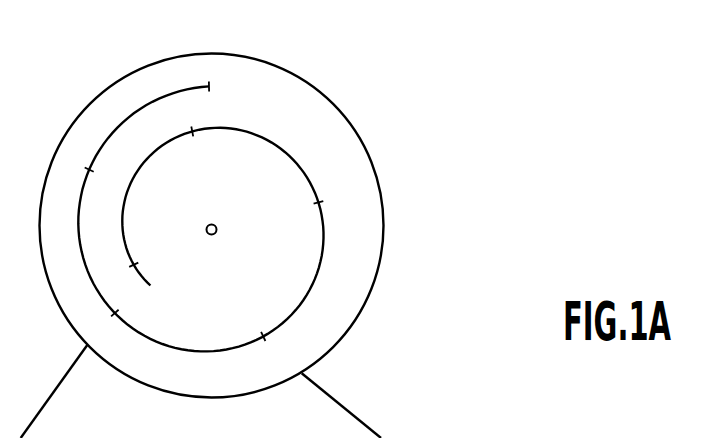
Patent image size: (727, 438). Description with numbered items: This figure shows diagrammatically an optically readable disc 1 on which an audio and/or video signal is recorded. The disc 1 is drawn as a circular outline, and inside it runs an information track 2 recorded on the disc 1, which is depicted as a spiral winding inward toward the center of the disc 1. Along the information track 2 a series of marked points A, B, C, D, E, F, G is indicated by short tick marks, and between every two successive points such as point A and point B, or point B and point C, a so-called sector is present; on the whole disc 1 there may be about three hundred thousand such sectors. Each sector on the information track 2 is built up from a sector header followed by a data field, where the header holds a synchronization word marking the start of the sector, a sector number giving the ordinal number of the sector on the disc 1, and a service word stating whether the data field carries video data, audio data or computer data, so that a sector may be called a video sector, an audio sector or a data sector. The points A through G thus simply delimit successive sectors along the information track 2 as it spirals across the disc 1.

The optically readable disc 1 is at (307, 85).
The information track 2 is at (265, 140).
The point A is at (220, 77).
The point B is at (80, 162).
The point C is at (106, 320).
The point D is at (275, 350).
The point E is at (327, 199).
The point F is at (182, 119).
The point G is at (126, 270).